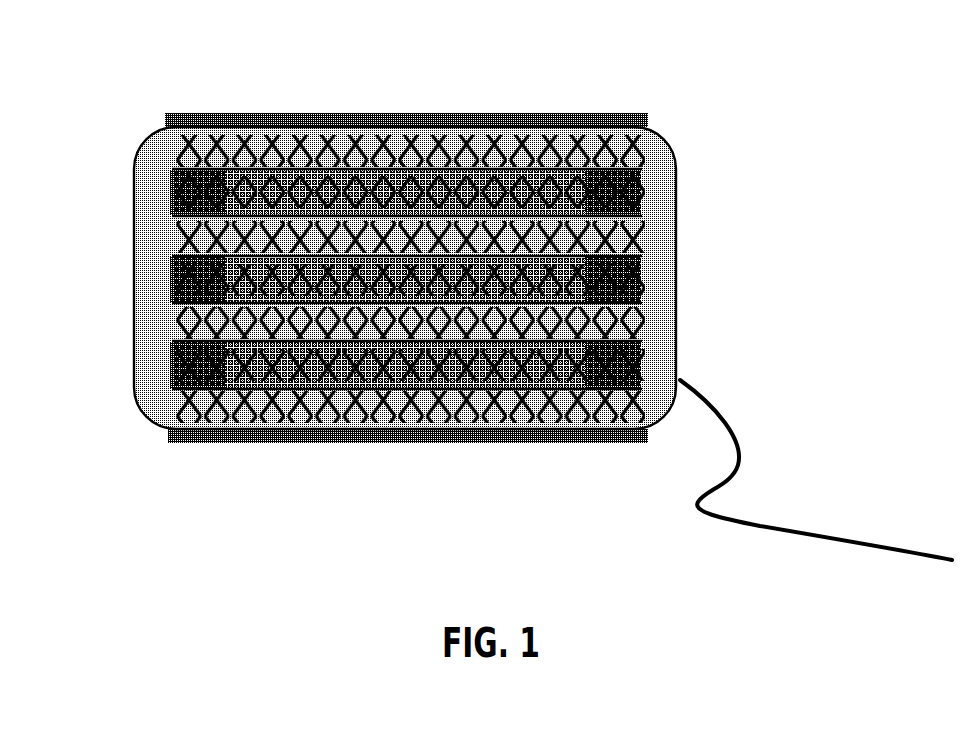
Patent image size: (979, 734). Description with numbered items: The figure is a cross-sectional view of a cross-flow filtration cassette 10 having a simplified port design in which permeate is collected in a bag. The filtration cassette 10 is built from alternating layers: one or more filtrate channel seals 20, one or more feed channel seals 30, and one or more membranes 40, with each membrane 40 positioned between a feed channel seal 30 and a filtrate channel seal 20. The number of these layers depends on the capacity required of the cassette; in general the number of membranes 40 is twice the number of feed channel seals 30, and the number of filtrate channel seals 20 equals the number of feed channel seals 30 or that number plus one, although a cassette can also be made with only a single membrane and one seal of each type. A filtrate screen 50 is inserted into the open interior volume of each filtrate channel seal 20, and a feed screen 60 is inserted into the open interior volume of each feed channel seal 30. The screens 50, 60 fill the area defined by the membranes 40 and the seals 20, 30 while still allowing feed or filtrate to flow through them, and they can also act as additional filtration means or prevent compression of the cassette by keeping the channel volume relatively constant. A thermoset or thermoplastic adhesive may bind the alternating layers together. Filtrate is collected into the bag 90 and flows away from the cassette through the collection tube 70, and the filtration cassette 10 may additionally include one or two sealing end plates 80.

The filtration cassette 10 is at (478, 232).
The filtrate channel seal 20 is at (263, 408).
The feed channel seal 30 is at (178, 362).
The membrane 40 is at (178, 305).
The filtrate screen 50 is at (327, 240).
The feed screen 60 is at (323, 191).
The collection tube 70 is at (675, 497).
The sealing end plate 80 is at (651, 118).
The bag 90 is at (673, 204).